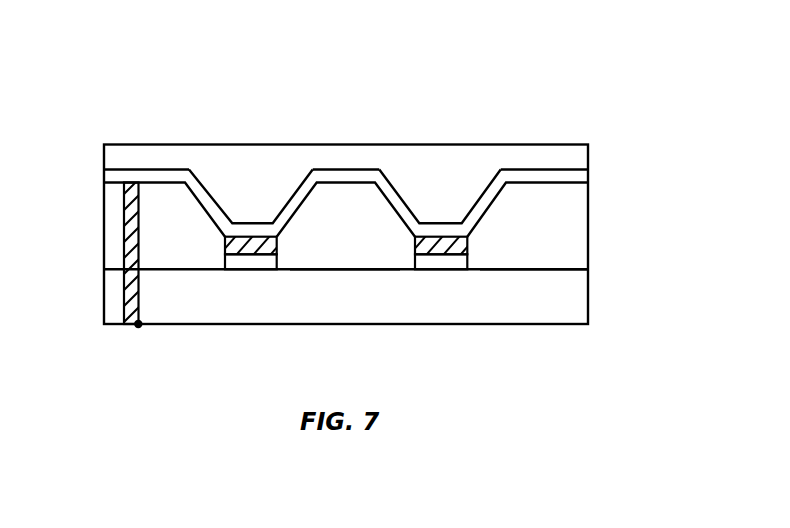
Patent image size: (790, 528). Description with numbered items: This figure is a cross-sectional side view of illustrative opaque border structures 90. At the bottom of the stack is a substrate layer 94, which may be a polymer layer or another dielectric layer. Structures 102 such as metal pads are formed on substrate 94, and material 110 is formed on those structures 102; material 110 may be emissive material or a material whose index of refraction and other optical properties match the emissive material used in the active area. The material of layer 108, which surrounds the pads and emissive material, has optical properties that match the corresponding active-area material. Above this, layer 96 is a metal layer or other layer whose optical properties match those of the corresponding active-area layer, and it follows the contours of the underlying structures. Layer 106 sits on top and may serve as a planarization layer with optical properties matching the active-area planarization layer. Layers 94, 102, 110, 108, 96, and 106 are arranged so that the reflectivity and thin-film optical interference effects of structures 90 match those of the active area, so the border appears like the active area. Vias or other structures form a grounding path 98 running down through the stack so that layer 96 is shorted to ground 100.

The structures 90 is at (570, 125).
The substrate layer 94 is at (347, 312).
The layer 96 is at (532, 177).
The grounding path 98 is at (132, 245).
The ground 100 is at (137, 328).
The structures 102 is at (232, 263).
The layer 106 is at (438, 157).
The layer 108 is at (375, 258).
The material 110 is at (272, 248).